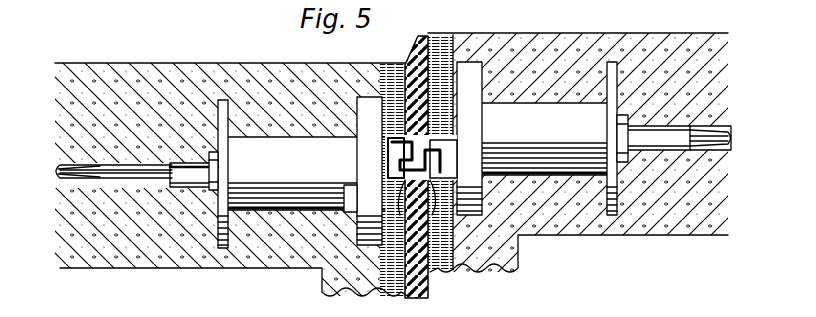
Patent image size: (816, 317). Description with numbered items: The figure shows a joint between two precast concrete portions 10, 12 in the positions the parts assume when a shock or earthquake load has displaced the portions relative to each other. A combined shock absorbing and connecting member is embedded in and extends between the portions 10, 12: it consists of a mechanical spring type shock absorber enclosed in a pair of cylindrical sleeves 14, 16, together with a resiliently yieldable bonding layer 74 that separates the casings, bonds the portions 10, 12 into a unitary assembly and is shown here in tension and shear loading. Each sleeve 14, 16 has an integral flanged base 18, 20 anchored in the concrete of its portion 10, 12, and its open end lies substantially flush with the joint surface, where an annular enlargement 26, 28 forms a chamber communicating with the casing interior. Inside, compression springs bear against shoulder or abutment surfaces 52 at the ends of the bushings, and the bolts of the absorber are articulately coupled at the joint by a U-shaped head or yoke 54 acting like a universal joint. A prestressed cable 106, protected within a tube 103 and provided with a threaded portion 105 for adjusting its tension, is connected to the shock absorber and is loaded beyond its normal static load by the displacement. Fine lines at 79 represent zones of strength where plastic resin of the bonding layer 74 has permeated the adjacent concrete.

The portion of relatively movable member 10 is at (173, 252).
The portion of relatively movable member 12 is at (626, 233).
The cylindrical sleeve 14 is at (305, 168).
The cylindrical sleeve 16 is at (555, 92).
The flanged base 18 is at (226, 148).
The flanged base 20 is at (608, 122).
The annular enlargement 26 is at (365, 143).
The annular enlargement 28 is at (468, 120).
The shoulder or abutment surface 52 is at (364, 186).
The U-shaped head or yoke 54 is at (453, 142).
The resilient bonding layer 74 is at (417, 40).
The zones of strength 79 is at (445, 270).
The protective tube 103 is at (161, 164).
The threaded portion of tendon 105 is at (180, 170).
The prestressed cable 106 is at (130, 184).